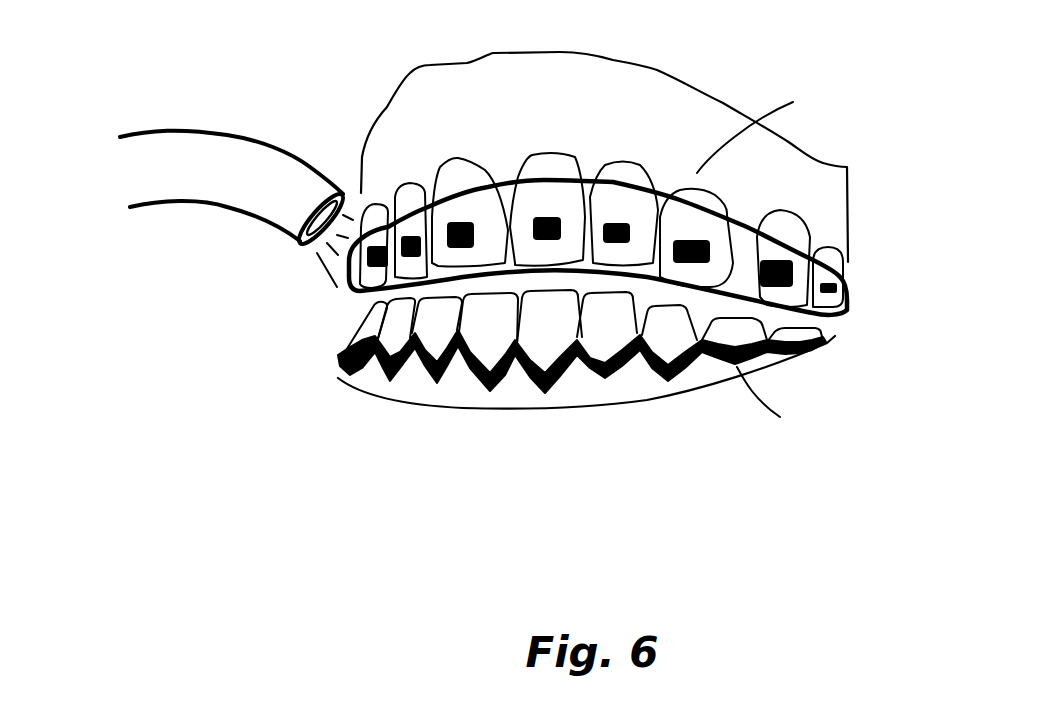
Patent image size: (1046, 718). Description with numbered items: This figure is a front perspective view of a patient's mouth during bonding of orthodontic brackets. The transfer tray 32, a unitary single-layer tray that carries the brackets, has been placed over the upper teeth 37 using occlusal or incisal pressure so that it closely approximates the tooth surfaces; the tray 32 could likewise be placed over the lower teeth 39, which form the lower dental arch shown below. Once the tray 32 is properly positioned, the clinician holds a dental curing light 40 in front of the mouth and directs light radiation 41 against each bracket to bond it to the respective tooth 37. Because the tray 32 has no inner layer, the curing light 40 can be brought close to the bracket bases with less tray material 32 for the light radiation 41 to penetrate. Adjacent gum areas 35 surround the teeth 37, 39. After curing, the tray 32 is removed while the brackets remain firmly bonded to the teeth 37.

The transfer tray 32 is at (603, 173).
The gums 35 is at (767, 258).
The upper teeth 37 is at (453, 177).
The lower teeth 39 is at (472, 387).
The dental curing light 40 is at (208, 90).
The light radiation 41 is at (320, 290).